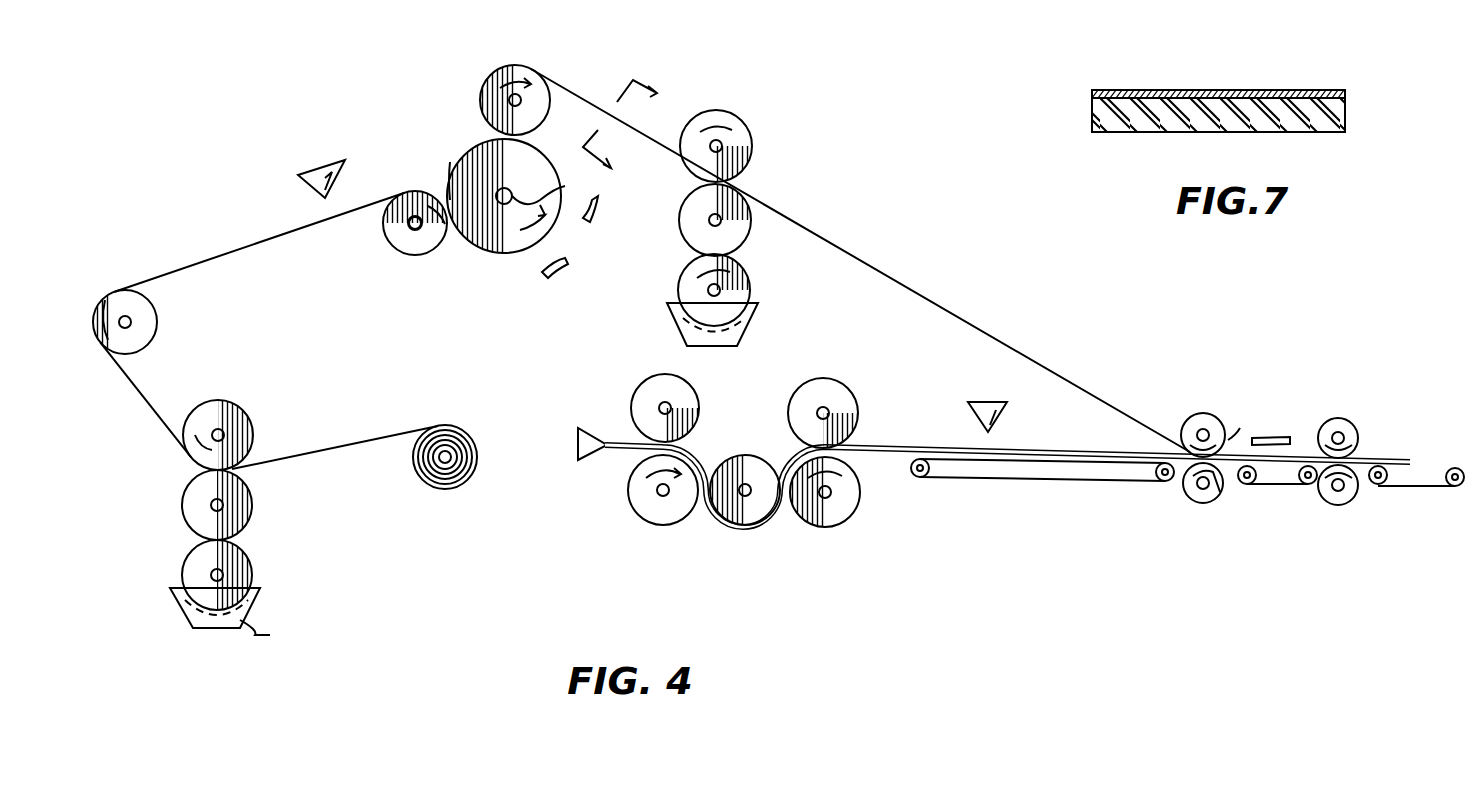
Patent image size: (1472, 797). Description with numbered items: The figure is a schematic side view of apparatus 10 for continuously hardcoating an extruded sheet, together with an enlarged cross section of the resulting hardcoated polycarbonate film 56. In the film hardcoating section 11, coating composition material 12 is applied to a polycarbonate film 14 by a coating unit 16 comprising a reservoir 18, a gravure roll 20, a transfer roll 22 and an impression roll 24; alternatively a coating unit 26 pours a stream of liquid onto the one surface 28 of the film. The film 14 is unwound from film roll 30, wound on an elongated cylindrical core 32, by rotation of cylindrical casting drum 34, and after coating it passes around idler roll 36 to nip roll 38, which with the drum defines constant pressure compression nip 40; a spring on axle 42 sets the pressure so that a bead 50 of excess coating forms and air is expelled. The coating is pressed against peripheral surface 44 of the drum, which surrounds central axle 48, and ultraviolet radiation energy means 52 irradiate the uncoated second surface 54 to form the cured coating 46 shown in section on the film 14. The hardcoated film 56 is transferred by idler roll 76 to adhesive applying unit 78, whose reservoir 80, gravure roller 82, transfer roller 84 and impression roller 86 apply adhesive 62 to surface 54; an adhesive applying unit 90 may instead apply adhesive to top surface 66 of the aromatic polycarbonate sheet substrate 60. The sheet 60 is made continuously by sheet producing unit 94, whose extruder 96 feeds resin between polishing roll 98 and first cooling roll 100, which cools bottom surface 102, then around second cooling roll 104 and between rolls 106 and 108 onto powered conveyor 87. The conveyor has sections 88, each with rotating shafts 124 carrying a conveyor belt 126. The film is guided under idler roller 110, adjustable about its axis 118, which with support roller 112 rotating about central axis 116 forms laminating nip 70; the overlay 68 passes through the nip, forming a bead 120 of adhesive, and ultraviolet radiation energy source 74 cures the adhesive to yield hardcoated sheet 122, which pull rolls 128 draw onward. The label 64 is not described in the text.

In FIG. 4, the apparatus 10 is at (867, 49).
In FIG. 4, the film hardcoating section 11 is at (198, 103).
In FIG. 4, the coating composition material 12 is at (334, 170).
In FIG. 4, the polycarbonate film 14 is at (500, 245).
In FIG. 7, the polycarbonate film 14 is at (1125, 132).
In FIG. 4, the coating unit 16 is at (137, 508).
In FIG. 4, the reservoir 18 is at (180, 612).
In FIG. 4, the gravure roll 20 is at (250, 560).
In FIG. 4, the transfer roll 22 is at (252, 512).
In FIG. 4, the impression roll 24 is at (250, 420).
In FIG. 4, the coating unit 26 is at (315, 172).
In FIG. 4, the one surface 28 is at (240, 256).
In FIG. 4, the film roll 30 is at (468, 440).
In FIG. 4, the elongated cylindrical core 32 is at (448, 463).
In FIG. 4, the cylindrical casting drum 34 is at (482, 148).
In FIG. 4, the idler roll 36 is at (158, 322).
In FIG. 4, the nip roll 38 is at (408, 250).
In FIG. 4, the constant pressure compression nip 40 is at (456, 228).
In FIG. 4, the axle 42 is at (410, 228).
In FIG. 4, the peripheral surface 44 is at (450, 158).
In FIG. 7, the cured coating 46 is at (1135, 92).
In FIG. 4, the central axle 48 is at (560, 188).
In FIG. 4, the bead 50 is at (448, 200).
In FIG. 4, the ultraviolet radiation energy means 52 is at (596, 205).
In FIG. 4, the uncoated second surface 54 is at (250, 252).
In FIG. 4, the hardcoated polycarbonate film 56 is at (562, 82).
In FIG. 7, the hardcoated polycarbonate film 56 is at (1305, 37).
In FIG. 4, the aromatic polycarbonate sheet substrate 60 is at (900, 447).
In FIG. 4, the ultraviolet radiation curable, solvent free adhesive 62 is at (752, 328).
In FIG. 4, the heating section 64 is at (1070, 414).
In FIG. 4, the top surface 66 is at (945, 448).
In FIG. 4, the overlay 68 is at (1245, 447).
In FIG. 4, the laminating nip 70 is at (1232, 425).
In FIG. 4, the ultraviolet radiation energy source 74 is at (1285, 432).
In FIG. 4, the idler roll 76 is at (545, 120).
In FIG. 4, the adhesive applying unit 78 is at (655, 215).
In FIG. 4, the reservoir 80 is at (676, 328).
In FIG. 4, the gravure roller 82 is at (746, 275).
In FIG. 4, the transfer roller 84 is at (690, 245).
In FIG. 4, the impression roller 86 is at (748, 130).
In FIG. 4, the powered conveyor 87 is at (1120, 549).
In FIG. 4, the conveyor sections 88 is at (1073, 482).
In FIG. 4, the adhesive applying unit 90 is at (984, 395).
In FIG. 4, the sheet producing unit 94 is at (582, 379).
In FIG. 4, the extruder 96 is at (570, 455).
In FIG. 4, the polishing roll 98 is at (695, 395).
In FIG. 4, the first cooling roll 100 is at (672, 525).
In FIG. 4, the bottom surface 102 is at (617, 455).
In FIG. 4, the second cooling roll 104 is at (747, 455).
In FIG. 4, the roll 106 is at (840, 525).
In FIG. 4, the roll 108 is at (845, 388).
In FIG. 4, the idler roller 110 is at (1185, 415).
In FIG. 4, the support roller 112 is at (1192, 502).
In FIG. 4, the central axis 116 is at (1215, 502).
In FIG. 4, the axis 118 is at (1208, 412).
In FIG. 4, the bead 120 is at (1165, 440).
In FIG. 4, the hardcoated sheet 122 is at (1410, 455).
In FIG. 4, the rotating shafts 124 is at (928, 475).
In FIG. 4, the conveyor belt 126 is at (1012, 482).
In FIG. 4, the pull rolls 128 is at (1348, 420).